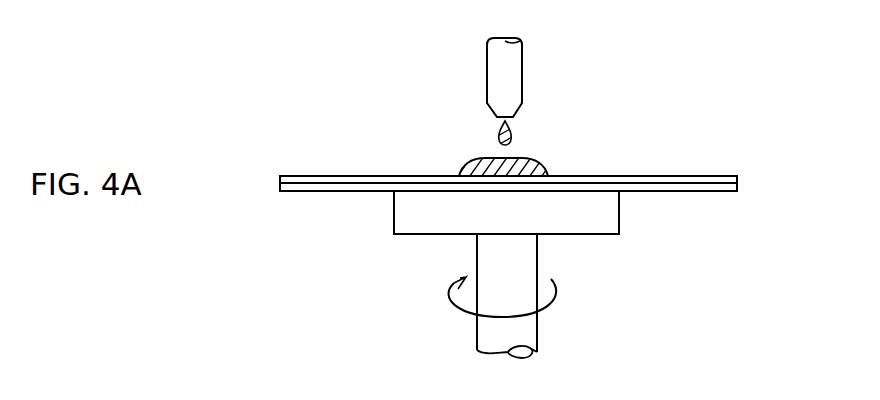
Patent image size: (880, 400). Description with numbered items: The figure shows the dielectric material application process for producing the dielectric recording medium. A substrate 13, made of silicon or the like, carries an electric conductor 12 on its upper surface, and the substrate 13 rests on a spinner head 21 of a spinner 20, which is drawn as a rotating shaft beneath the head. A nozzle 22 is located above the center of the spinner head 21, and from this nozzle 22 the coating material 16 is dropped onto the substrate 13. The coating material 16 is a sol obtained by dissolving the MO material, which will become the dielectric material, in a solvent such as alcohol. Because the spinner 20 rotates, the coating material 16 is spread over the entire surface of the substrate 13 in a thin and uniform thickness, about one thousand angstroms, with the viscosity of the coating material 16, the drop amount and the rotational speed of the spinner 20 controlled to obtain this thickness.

The nozzle 22 is at (512, 69).
The coating material 16 is at (548, 148).
The electric conductor 12 is at (700, 174).
The substrate 13 is at (722, 190).
The spinner head 21 is at (607, 214).
The spinner 20 is at (608, 290).